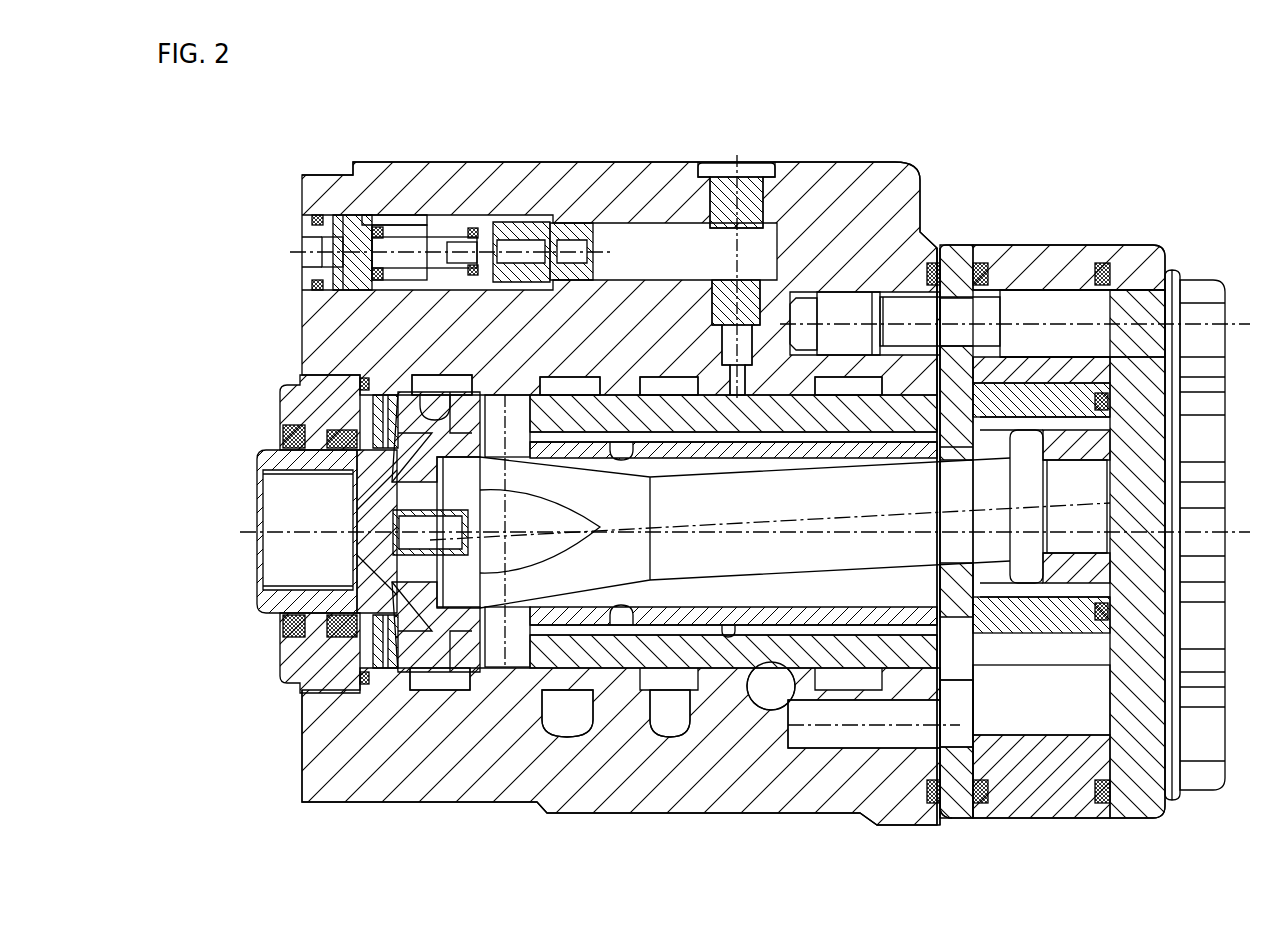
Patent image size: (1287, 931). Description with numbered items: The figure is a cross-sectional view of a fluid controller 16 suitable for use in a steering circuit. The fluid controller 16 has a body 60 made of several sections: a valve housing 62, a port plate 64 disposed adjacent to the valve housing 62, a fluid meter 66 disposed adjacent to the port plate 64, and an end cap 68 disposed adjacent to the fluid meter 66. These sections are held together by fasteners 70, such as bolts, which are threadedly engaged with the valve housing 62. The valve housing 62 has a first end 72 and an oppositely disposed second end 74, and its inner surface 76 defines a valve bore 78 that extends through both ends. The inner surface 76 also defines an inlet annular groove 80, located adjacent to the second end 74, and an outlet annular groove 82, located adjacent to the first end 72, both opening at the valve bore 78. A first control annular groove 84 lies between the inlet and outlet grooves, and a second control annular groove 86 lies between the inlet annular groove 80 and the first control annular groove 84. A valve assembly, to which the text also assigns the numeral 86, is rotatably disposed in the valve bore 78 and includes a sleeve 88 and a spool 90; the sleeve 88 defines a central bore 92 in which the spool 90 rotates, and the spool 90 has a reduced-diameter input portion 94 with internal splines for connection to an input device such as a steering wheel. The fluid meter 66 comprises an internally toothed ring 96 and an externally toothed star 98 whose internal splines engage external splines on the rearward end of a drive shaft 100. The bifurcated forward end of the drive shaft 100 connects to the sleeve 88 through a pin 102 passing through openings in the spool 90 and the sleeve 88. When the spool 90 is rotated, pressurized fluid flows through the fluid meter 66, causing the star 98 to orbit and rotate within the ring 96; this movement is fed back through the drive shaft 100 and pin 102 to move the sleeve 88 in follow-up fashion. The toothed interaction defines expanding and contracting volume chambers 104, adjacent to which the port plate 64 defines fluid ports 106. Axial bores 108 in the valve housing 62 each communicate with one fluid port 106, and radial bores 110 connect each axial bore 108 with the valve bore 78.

The fluid controller 16 is at (262, 203).
The body 60 is at (1104, 128).
The valve housing 62 is at (845, 158).
The port plate 64 is at (955, 243).
The fluid meter 66 is at (1037, 243).
The end cap 68 is at (1137, 243).
The fasteners 70 is at (1193, 277).
The first end 72 is at (300, 328).
The second end 74 is at (937, 768).
The inner surface 76 is at (800, 405).
The valve bore 78 is at (738, 668).
The inlet annular groove 80 is at (842, 378).
The outlet annular groove 82 is at (437, 376).
The first control annular groove 84 is at (578, 377).
The second control annular groove 86 is at (663, 377).
The sleeve 88 is at (532, 675).
The spool 90 is at (412, 648).
The central bore 92 is at (903, 632).
The input portion 94 is at (315, 617).
The internally toothed ring 96 is at (1066, 797).
The externally toothed star 98 is at (1052, 627).
The drive shaft 100 is at (751, 519).
The pin 102 is at (512, 410).
The fluid volume chambers 104 is at (1041, 700).
The fluid ports 106 is at (957, 715).
The axial bores 108 is at (873, 724).
The radial bores 110 is at (763, 690).